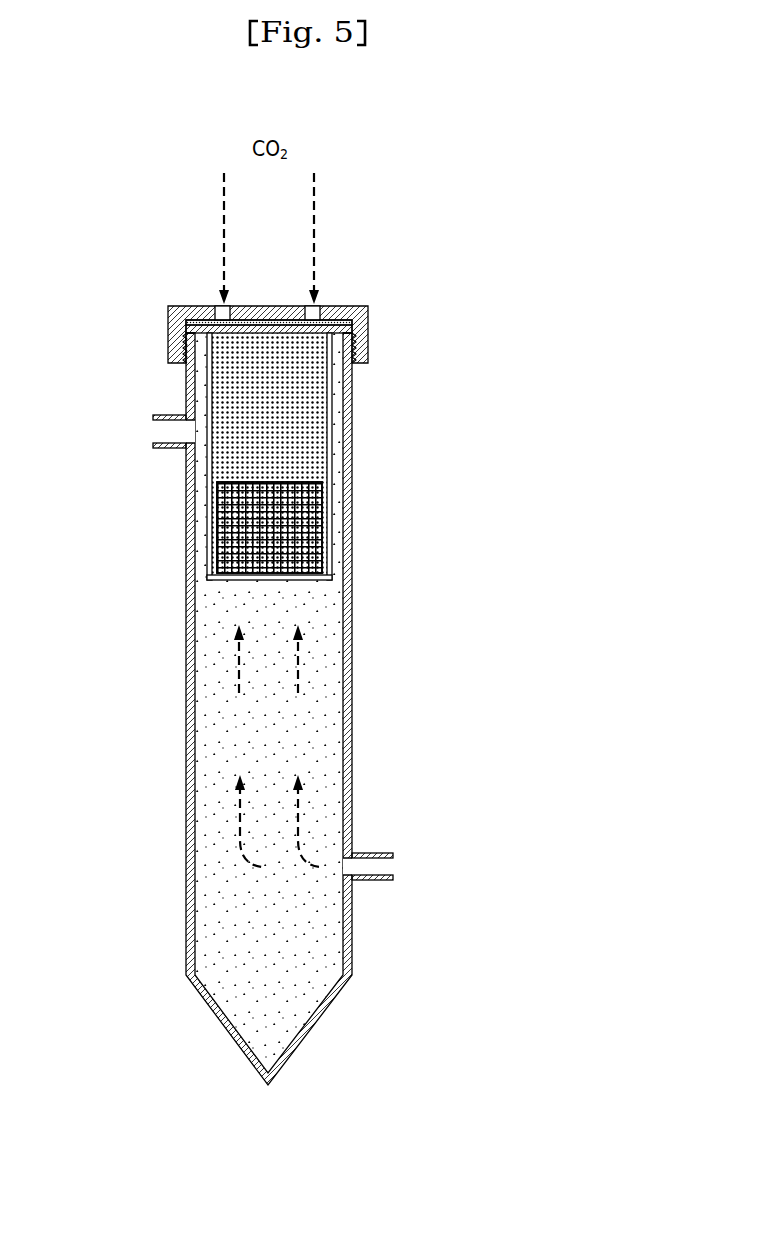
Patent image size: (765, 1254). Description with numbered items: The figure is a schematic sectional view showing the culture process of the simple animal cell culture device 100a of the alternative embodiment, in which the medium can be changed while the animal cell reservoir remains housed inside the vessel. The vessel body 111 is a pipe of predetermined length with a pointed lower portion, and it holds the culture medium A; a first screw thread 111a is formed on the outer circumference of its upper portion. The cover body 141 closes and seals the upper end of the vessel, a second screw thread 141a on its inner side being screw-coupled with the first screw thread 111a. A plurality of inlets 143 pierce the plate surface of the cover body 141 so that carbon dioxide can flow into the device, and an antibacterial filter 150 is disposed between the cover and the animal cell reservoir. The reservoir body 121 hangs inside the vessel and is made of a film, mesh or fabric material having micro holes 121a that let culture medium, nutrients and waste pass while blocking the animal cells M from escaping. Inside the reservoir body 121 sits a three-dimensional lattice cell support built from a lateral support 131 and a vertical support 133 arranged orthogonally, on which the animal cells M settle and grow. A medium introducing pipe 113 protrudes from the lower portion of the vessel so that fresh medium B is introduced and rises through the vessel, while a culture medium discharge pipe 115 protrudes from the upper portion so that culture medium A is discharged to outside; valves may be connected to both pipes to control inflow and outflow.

The simple animal cell culture device 100a is at (458, 240).
The vessel body 111 is at (353, 737).
The first screw thread 111a is at (355, 345).
The medium introducing pipe 113 is at (368, 853).
The culture medium discharge pipe 115 is at (155, 450).
The reservoir body 121 is at (332, 446).
The micro holes 121a is at (316, 393).
The lateral support 131 is at (322, 539).
The vertical support 133 is at (322, 487).
The cover body 141 is at (258, 325).
The second screw thread 141a is at (184, 345).
The inlets 143 is at (218, 316).
The antibacterial filter 150 is at (332, 322).
The culture medium A is at (203, 432).
The medium B is at (358, 866).
The animal cells M is at (212, 578).